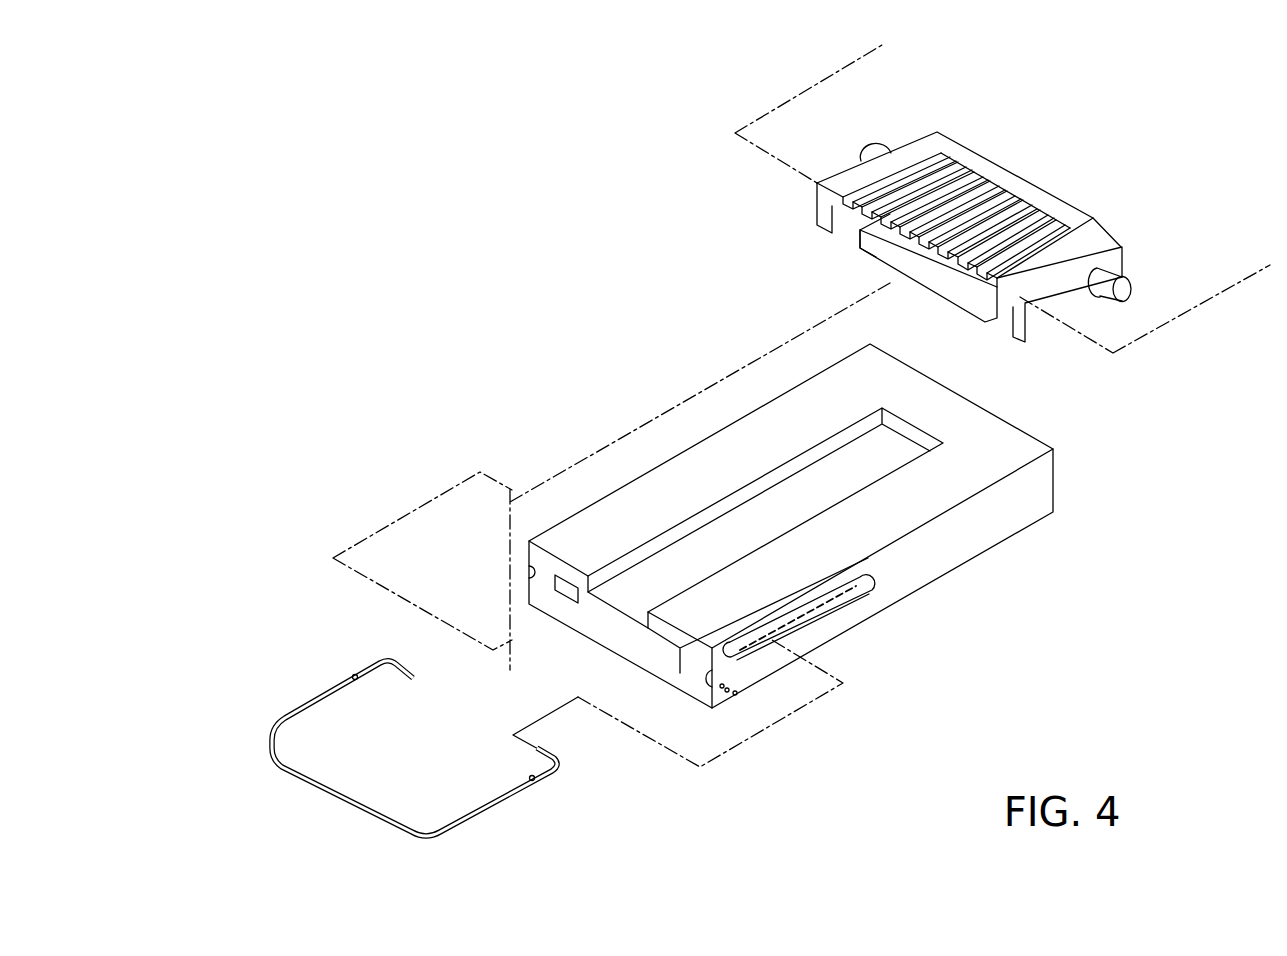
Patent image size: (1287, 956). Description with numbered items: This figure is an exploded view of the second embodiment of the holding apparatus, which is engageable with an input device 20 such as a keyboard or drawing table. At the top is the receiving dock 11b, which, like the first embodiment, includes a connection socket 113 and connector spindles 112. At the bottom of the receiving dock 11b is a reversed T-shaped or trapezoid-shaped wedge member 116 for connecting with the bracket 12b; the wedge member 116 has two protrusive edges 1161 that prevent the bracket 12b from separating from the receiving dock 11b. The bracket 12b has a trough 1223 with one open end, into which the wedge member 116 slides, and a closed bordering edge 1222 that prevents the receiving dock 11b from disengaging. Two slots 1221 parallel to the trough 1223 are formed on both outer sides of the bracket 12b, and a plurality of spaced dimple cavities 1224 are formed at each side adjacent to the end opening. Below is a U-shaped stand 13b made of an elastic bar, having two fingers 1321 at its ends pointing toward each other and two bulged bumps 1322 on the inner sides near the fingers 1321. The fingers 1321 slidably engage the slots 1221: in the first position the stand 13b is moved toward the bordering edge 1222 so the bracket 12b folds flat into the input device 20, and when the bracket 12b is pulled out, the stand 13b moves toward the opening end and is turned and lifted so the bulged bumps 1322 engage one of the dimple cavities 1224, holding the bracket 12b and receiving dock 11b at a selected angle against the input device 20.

The receiving dock 11b is at (986, 194).
The connector spindles 112 is at (882, 137).
The connection socket 113 is at (863, 205).
The wedge member 116 is at (912, 257).
The protrusive edges 1161 is at (840, 240).
The input device 20 is at (1212, 292).
The bracket 12b is at (782, 591).
The slots 1221 is at (836, 606).
The bordering edge 1222 is at (933, 433).
The trough 1223 is at (525, 578).
The dimple cavities 1224 is at (722, 690).
The stand 13b is at (443, 731).
The fingers 1321 is at (553, 753).
The bulged bumps 1322 is at (533, 779).